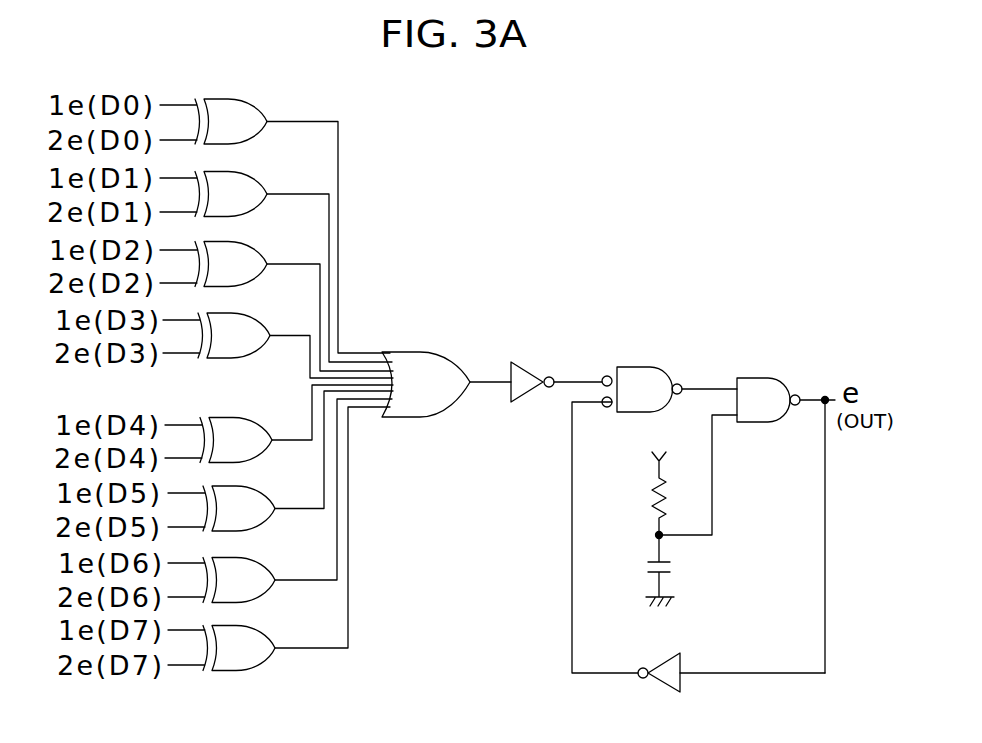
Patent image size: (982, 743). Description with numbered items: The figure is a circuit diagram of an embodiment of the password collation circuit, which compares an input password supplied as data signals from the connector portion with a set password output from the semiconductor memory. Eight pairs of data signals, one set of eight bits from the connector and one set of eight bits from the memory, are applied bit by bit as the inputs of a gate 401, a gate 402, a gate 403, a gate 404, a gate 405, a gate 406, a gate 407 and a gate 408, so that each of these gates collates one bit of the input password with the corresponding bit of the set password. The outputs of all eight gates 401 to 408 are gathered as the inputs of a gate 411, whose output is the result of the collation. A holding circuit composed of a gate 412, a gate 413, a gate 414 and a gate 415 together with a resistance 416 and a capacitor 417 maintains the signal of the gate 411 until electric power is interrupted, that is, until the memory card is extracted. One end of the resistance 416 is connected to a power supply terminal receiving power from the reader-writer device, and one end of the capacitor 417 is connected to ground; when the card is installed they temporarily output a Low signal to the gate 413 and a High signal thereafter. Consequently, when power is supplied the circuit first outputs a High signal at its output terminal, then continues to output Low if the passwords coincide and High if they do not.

The gate 401 is at (255, 99).
The gate 402 is at (255, 172).
The gate 403 is at (253, 242).
The gate 404 is at (259, 313).
The gate 405 is at (253, 417).
The gate 406 is at (264, 485).
The gate 407 is at (257, 558).
The gate 408 is at (260, 626).
The gate 411 is at (438, 352).
The gate 412 is at (649, 367).
The gate 413 is at (762, 378).
The gate 414 is at (688, 652).
The gate 415 is at (531, 364).
The resistance 416 is at (656, 498).
The capacitor 417 is at (673, 567).